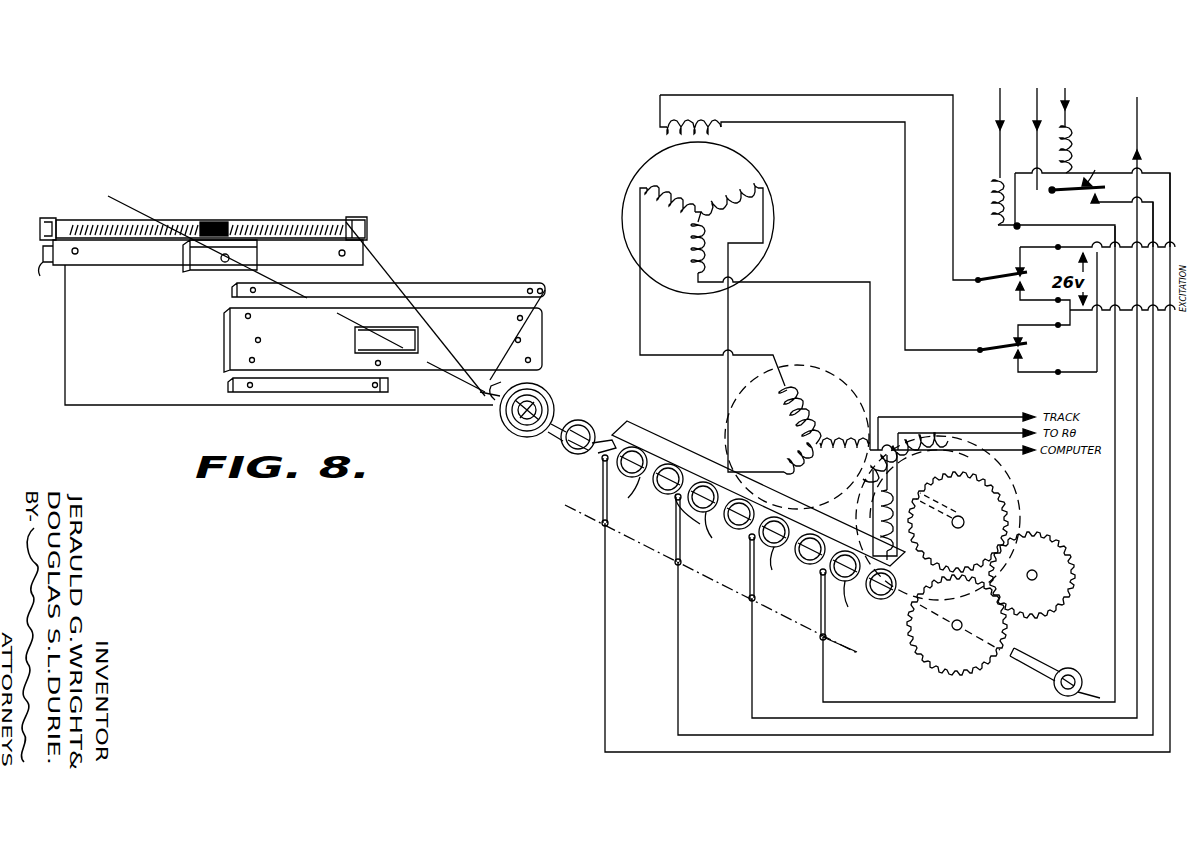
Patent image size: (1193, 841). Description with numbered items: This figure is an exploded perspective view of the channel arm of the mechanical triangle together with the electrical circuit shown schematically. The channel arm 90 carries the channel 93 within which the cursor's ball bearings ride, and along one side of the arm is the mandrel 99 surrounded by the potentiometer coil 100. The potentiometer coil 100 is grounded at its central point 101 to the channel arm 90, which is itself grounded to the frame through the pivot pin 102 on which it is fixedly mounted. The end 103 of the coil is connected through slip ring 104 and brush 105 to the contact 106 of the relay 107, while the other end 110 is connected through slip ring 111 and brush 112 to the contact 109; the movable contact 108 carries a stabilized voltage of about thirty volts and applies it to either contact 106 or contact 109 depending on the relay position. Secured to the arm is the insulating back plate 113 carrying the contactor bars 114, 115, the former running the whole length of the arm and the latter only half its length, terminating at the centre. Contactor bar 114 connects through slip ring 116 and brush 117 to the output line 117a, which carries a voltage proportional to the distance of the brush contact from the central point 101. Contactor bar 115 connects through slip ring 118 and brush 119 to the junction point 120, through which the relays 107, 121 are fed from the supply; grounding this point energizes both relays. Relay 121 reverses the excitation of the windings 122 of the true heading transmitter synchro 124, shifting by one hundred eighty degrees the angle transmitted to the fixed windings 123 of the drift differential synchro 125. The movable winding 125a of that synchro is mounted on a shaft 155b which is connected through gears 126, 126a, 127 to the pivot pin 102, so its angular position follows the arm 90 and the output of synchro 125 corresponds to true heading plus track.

The channel arm 90 is at (62, 290).
The channel 93 is at (37, 271).
The mandrel 99 is at (58, 218).
The potentiometer coil 100 is at (128, 221).
The central point 101 is at (208, 222).
The pivot pin 102 is at (1033, 661).
The end of potentiometer coil 103 is at (288, 282).
The slip ring 104 is at (700, 515).
The brush 105 is at (676, 545).
The contact 106 is at (1093, 197).
The relay 107 is at (1072, 150).
The movable contact 108 is at (1062, 192).
The contact 109 is at (1101, 168).
The end of potentiometer coil 110 is at (347, 221).
The slip ring 111 is at (636, 480).
The brush 112 is at (600, 500).
The back plate 113 is at (232, 346).
The contactor bar 114 is at (237, 289).
The contactor bar 115 is at (236, 386).
The slip ring 116 is at (785, 567).
The brush 117 is at (750, 575).
The output line 117a is at (752, 688).
The slip ring 118 is at (849, 616).
The brush 119 is at (812, 608).
The junction point 120 is at (1056, 236).
The relay 121 is at (990, 206).
The windings 122 is at (660, 110).
The fixed windings 123 is at (818, 372).
The true heading transmitter synchro 124 is at (775, 213).
The drift differential synchro 125 is at (886, 410).
The movable winding 125a is at (863, 506).
The gear 126 is at (1005, 524).
The gear 126a is at (1047, 548).
The gear 127 is at (948, 655).
The shaft 155b is at (951, 510).